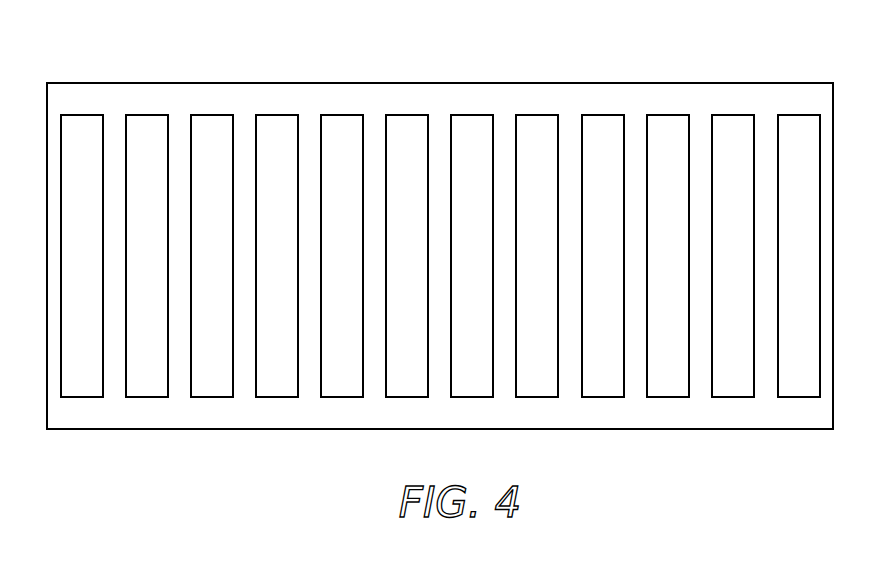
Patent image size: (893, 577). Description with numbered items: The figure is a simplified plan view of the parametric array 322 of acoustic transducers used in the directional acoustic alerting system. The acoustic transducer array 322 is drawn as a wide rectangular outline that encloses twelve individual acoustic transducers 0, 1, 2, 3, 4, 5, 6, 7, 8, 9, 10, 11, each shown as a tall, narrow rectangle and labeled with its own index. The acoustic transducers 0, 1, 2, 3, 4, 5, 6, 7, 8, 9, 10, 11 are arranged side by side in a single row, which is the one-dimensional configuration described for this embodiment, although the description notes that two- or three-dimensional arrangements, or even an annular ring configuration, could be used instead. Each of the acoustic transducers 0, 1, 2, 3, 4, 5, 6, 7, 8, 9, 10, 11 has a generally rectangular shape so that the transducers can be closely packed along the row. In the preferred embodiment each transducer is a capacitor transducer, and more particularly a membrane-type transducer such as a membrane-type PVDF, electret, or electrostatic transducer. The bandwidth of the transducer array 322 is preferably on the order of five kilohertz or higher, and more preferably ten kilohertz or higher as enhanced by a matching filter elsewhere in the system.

The parametric array of acoustic transducers 322 is at (166, 82).
The acoustic transducer 0 is at (82, 256).
The acoustic transducer 1 is at (147, 256).
The acoustic transducer 2 is at (212, 256).
The acoustic transducer 3 is at (277, 256).
The acoustic transducer 4 is at (342, 256).
The acoustic transducer 5 is at (407, 256).
The acoustic transducer 6 is at (472, 256).
The acoustic transducer 7 is at (537, 256).
The acoustic transducer 8 is at (603, 256).
The acoustic transducer 9 is at (668, 256).
The acoustic transducer 10 is at (733, 256).
The acoustic transducer 11 is at (799, 256).